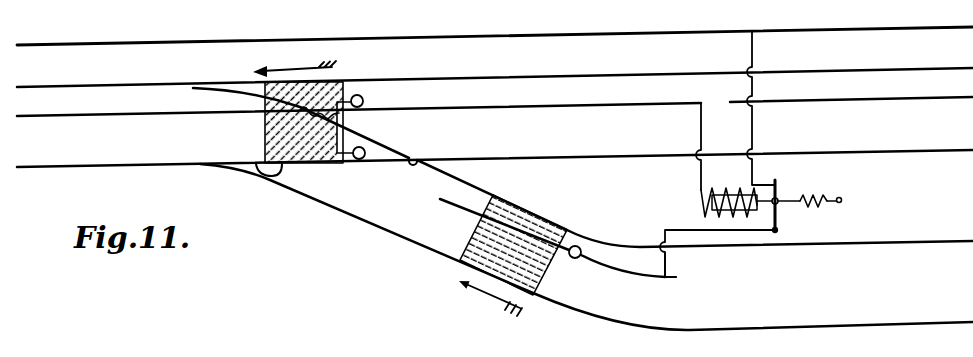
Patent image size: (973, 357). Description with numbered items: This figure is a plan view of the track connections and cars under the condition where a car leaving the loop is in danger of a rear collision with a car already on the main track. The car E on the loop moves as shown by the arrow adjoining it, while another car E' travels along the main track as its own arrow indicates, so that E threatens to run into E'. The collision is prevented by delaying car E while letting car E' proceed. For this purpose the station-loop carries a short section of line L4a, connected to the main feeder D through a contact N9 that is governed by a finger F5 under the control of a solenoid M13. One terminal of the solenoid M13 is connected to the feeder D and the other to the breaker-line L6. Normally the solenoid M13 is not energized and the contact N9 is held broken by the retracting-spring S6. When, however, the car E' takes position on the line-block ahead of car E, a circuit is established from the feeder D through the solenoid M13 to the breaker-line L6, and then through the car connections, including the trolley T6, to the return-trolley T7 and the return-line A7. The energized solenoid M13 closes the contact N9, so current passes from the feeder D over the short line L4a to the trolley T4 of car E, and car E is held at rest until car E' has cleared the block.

The main feeder D is at (605, 31).
The return-line A7 is at (495, 165).
The car on the main track E' is at (298, 122).
The car on the loop E is at (513, 255).
The trolley T6 is at (365, 118).
The return-trolley T7 is at (362, 164).
The trolley T4 is at (587, 252).
The breaker-line L6 is at (718, 110).
The short section of line L4a is at (684, 268).
The solenoid M13 is at (729, 192).
The contact N9 is at (788, 200).
The finger F5 is at (776, 219).
The retracting-spring S6 is at (822, 205).